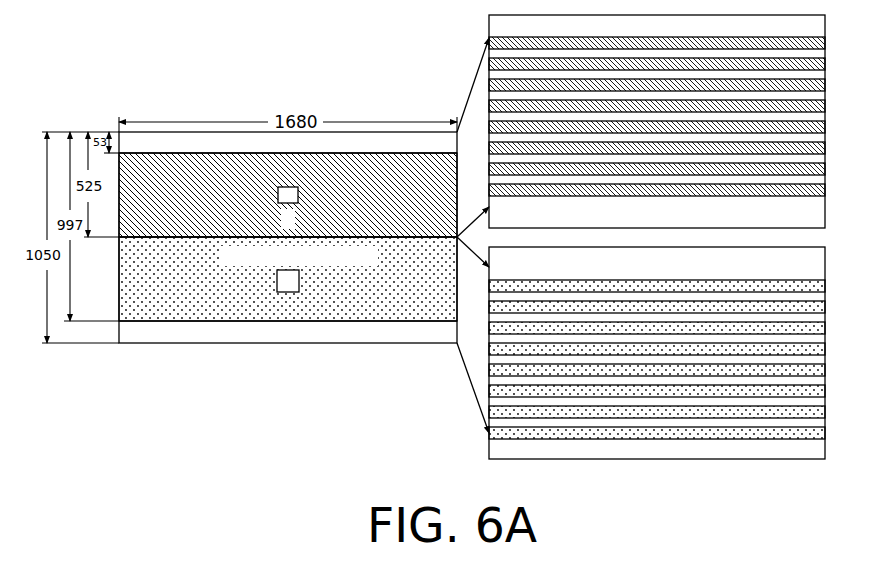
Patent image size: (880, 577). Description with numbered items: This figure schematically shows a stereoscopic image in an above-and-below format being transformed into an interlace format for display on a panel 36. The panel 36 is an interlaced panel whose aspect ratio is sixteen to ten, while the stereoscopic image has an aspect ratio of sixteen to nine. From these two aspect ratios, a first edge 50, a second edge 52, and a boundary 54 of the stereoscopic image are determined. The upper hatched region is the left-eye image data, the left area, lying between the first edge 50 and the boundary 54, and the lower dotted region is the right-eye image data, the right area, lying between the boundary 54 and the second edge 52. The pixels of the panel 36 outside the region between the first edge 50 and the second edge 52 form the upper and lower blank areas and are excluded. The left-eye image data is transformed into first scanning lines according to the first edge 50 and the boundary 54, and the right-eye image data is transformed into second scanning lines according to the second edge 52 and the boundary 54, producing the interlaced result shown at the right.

The panel 36 is at (198, 345).
The first edge 50 is at (163, 160).
The second edge 52 is at (165, 320).
The boundary 54 is at (167, 238).